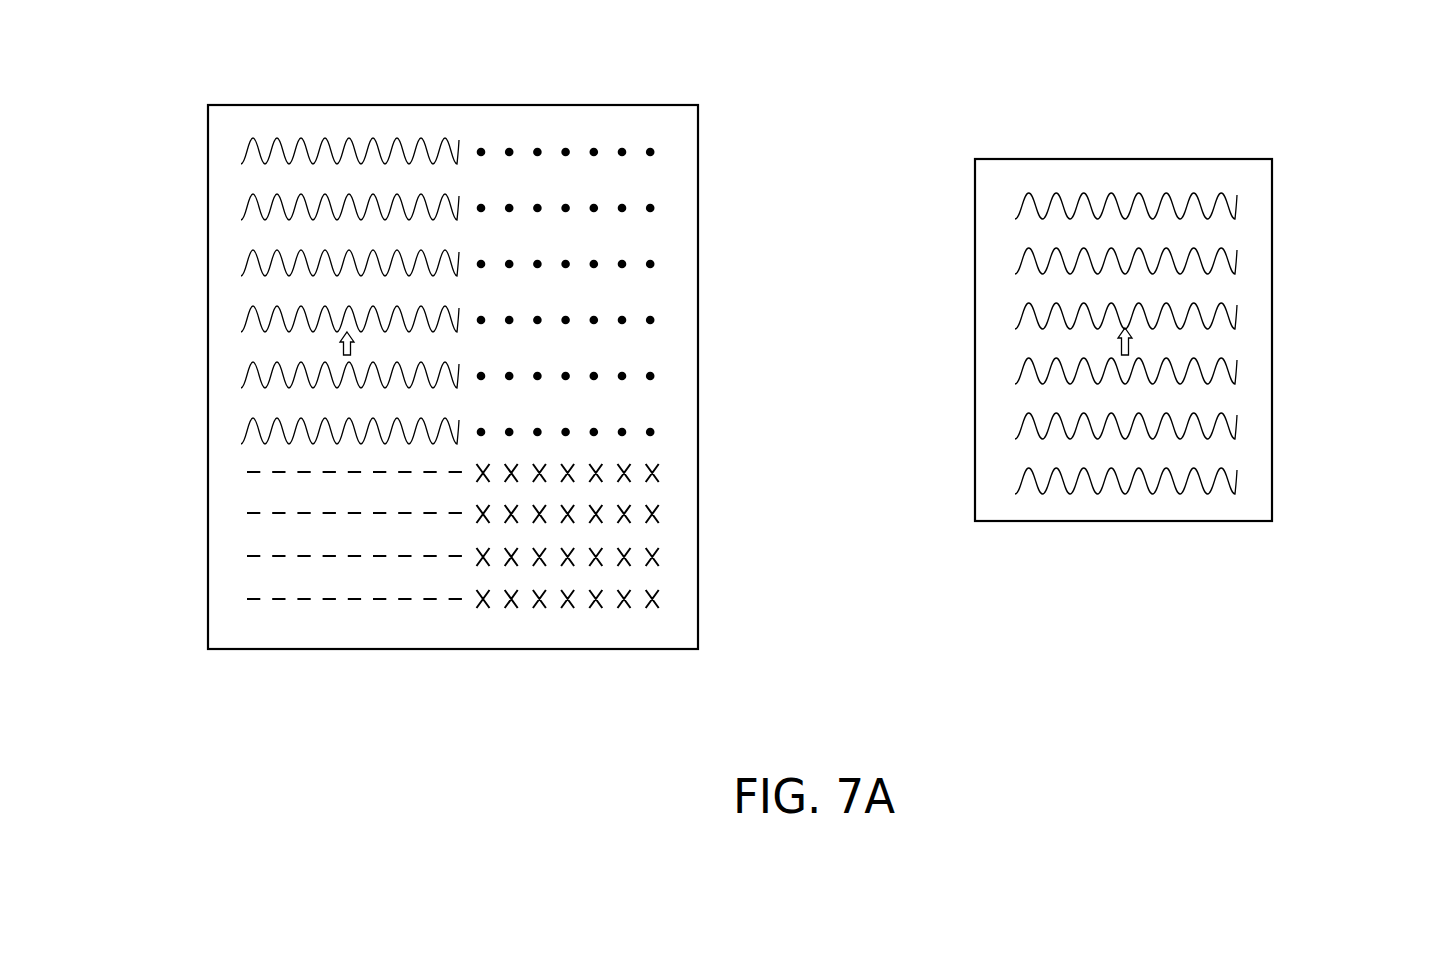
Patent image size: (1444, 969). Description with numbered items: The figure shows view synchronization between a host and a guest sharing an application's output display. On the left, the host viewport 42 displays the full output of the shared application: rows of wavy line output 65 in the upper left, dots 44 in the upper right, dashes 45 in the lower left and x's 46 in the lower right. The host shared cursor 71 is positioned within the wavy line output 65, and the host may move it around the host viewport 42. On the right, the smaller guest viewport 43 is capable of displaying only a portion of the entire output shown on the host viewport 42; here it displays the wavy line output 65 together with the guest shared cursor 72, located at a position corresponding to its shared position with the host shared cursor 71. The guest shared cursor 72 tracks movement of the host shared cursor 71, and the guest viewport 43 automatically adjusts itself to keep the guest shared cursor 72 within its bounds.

The host viewport 42 is at (423, 105).
The guest viewport 43 is at (1055, 197).
The dots 44 is at (652, 263).
The dashes 45 is at (252, 513).
The x's 46 is at (656, 470).
The wavy line output 65 is at (243, 213).
The host shared cursor 71 is at (340, 347).
The guest shared cursor 72 is at (1133, 342).